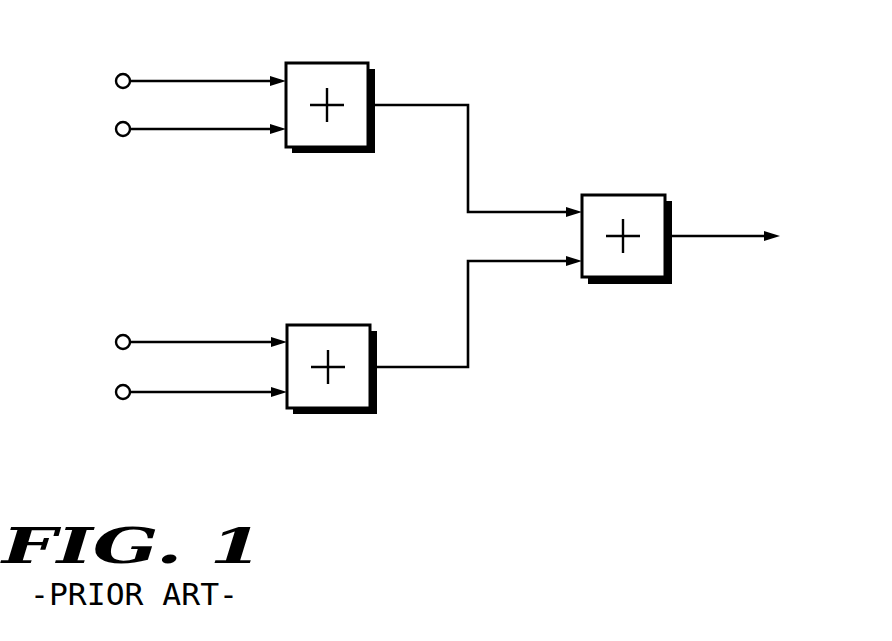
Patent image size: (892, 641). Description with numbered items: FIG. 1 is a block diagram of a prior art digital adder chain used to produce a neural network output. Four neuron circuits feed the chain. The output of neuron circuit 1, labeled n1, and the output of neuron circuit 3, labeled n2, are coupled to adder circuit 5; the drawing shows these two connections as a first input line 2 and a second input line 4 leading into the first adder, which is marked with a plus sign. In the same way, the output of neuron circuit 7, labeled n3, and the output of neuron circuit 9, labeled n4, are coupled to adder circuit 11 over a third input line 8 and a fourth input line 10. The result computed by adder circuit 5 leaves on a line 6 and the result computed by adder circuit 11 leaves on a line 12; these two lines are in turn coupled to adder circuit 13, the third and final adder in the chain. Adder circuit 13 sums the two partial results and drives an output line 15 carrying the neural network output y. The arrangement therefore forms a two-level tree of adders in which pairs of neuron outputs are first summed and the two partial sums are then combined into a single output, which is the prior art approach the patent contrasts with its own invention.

The neuron circuit 1 is at (121, 73).
The first input line 2 is at (204, 79).
The neuron circuit 3 is at (123, 136).
The second input line 4 is at (203, 132).
The adder circuit 5 is at (348, 63).
The first adder output line 6 is at (468, 170).
The neuron circuit 7 is at (123, 334).
The third input line 8 is at (204, 340).
The neuron circuit 9 is at (125, 399).
The fourth input line 10 is at (203, 395).
The adder circuit 11 is at (348, 413).
The second adder output line 12 is at (468, 302).
The adder circuit 13 is at (640, 195).
The output line y 15 is at (713, 239).